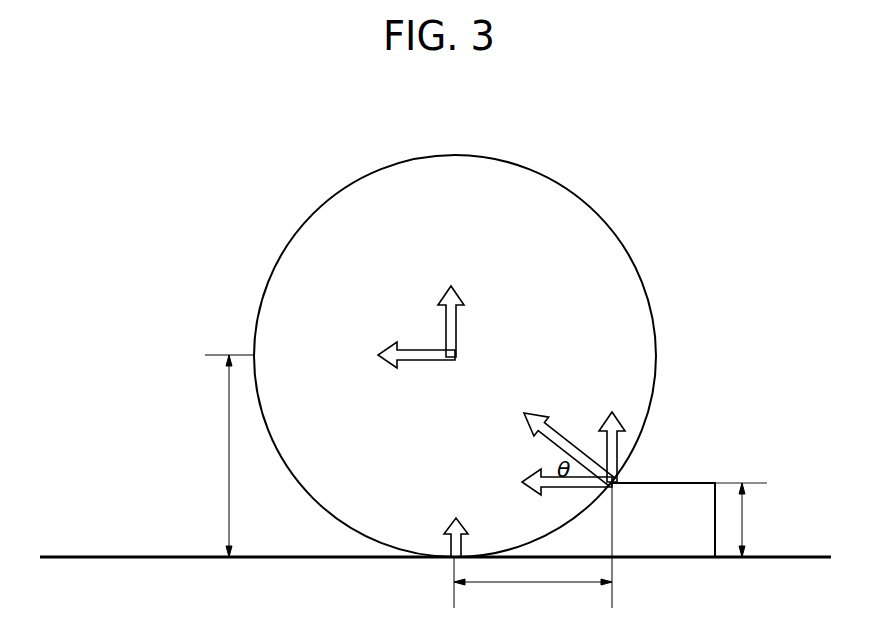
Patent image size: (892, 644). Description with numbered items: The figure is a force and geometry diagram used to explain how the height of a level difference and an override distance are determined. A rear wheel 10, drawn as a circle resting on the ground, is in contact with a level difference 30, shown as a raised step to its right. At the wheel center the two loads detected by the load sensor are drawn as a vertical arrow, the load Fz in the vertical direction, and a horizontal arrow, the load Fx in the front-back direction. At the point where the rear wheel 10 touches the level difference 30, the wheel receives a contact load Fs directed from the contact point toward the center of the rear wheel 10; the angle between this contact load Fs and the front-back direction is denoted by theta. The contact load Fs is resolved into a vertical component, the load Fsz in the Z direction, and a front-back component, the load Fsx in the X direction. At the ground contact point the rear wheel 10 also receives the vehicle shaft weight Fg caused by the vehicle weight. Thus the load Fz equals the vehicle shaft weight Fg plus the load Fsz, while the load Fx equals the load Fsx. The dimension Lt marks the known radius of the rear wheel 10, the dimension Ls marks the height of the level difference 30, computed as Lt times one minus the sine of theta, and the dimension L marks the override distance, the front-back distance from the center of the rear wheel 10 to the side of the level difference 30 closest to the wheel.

The rear wheel 10 is at (553, 178).
The level difference 30 is at (683, 483).
The load in the vertical direction Fz is at (464, 321).
The load in the front-back direction Fx is at (416, 369).
The contact load Fs is at (569, 439).
The load in the Z direction Fsz is at (619, 432).
The load in the X direction Fsx is at (567, 497).
The vehicle shaft weight Fg is at (441, 537).
The radius of the rear wheel Lt is at (225, 456).
The height of the level difference Ls is at (755, 520).
The override distance L is at (533, 547).